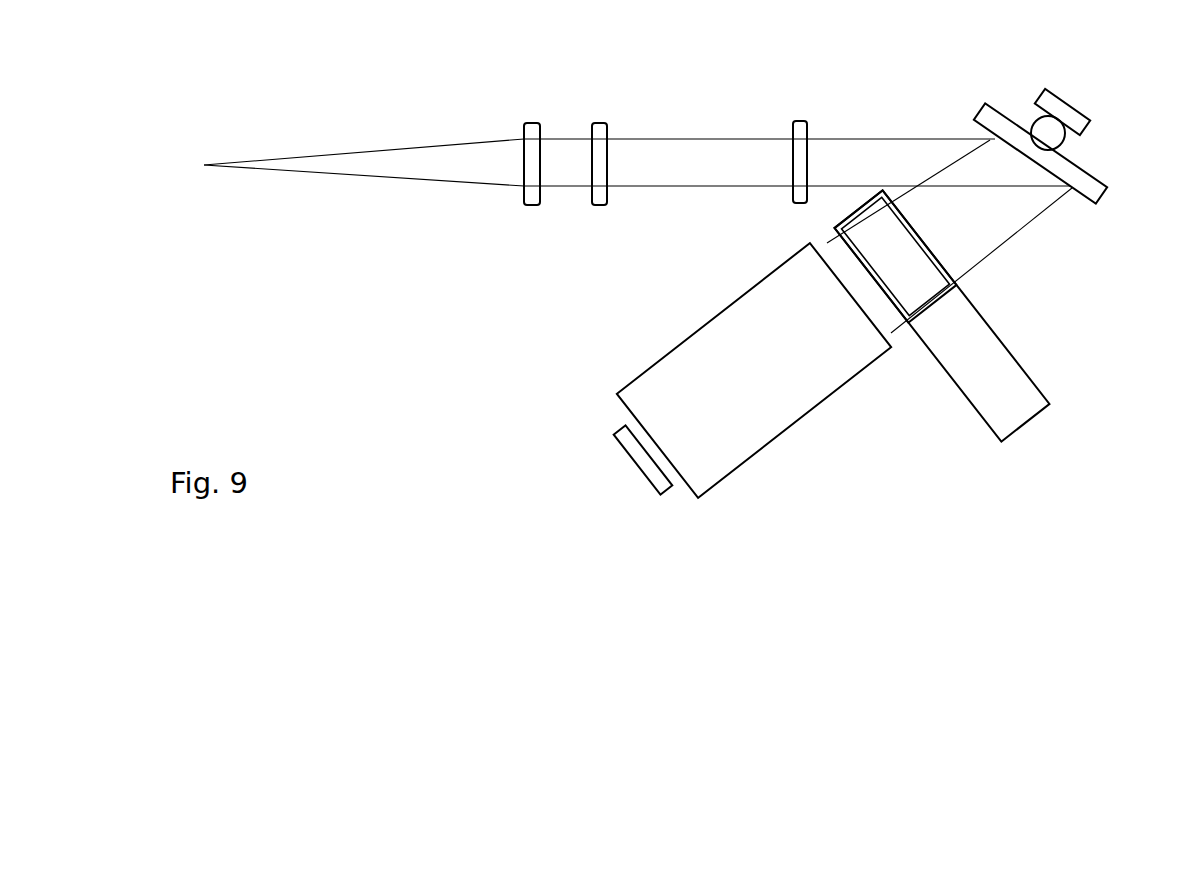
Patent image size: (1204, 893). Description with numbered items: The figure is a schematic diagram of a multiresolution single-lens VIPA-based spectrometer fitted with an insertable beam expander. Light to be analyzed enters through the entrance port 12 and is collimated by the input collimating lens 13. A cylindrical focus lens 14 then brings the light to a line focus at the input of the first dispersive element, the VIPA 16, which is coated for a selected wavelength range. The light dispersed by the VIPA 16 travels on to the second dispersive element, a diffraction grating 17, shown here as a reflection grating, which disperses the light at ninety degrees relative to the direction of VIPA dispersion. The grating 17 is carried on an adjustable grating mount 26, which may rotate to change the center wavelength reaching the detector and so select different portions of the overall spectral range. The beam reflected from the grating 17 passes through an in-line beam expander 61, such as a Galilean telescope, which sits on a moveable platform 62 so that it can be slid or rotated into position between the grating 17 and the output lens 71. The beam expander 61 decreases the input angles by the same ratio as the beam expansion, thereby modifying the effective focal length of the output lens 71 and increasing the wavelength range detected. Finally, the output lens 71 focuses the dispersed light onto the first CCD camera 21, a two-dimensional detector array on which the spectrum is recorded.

The entrance port 12 is at (203, 165).
The input collimating lens 13 is at (523, 127).
The cylindrical focus lens 14 is at (607, 127).
The VIPA 16 is at (810, 128).
The diffraction grating 17 is at (1107, 188).
The adjustable grating mount 26 is at (1063, 107).
The in-line beam expander 61 is at (889, 277).
The moveable platform 62 is at (993, 409).
The output lens 71 is at (721, 382).
The first CCD camera 21 is at (660, 497).